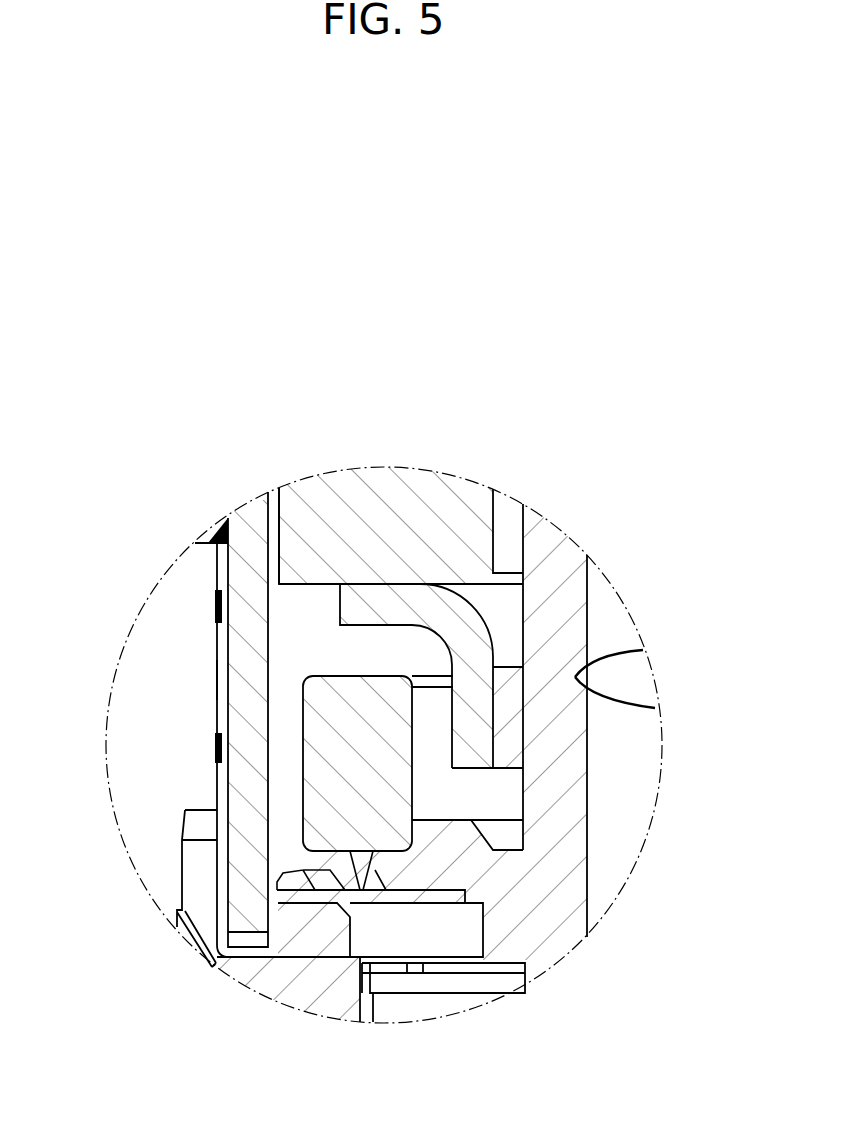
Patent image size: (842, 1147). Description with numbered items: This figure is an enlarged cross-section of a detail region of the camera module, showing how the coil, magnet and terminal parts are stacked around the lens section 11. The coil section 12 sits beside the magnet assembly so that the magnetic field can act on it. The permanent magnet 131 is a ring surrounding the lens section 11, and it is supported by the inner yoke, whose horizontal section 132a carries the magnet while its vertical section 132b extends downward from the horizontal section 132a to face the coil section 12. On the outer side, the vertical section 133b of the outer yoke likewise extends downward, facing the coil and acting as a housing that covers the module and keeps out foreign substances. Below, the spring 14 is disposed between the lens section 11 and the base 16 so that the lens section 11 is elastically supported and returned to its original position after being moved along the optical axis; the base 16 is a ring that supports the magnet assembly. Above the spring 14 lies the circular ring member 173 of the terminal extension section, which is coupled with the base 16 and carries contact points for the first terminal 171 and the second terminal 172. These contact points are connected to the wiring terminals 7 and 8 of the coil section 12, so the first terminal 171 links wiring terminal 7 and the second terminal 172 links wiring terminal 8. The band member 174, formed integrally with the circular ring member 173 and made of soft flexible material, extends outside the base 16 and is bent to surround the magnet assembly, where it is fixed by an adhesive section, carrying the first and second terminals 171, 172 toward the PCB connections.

The wiring terminal 7 is at (207, 950).
The wiring terminal 8 is at (347, 863).
The lens section 11 is at (573, 817).
The coil section 12 is at (372, 768).
The spring 14 is at (492, 967).
The base 16 is at (318, 990).
The permanent magnet 131 is at (472, 533).
The horizontal section 132a is at (372, 605).
The vertical section 132b is at (478, 692).
The vertical section 133b is at (252, 582).
The first terminal 171 is at (217, 747).
The second terminal 172 is at (217, 602).
The circular ring member 173 is at (428, 900).
The band member 174 is at (217, 680).